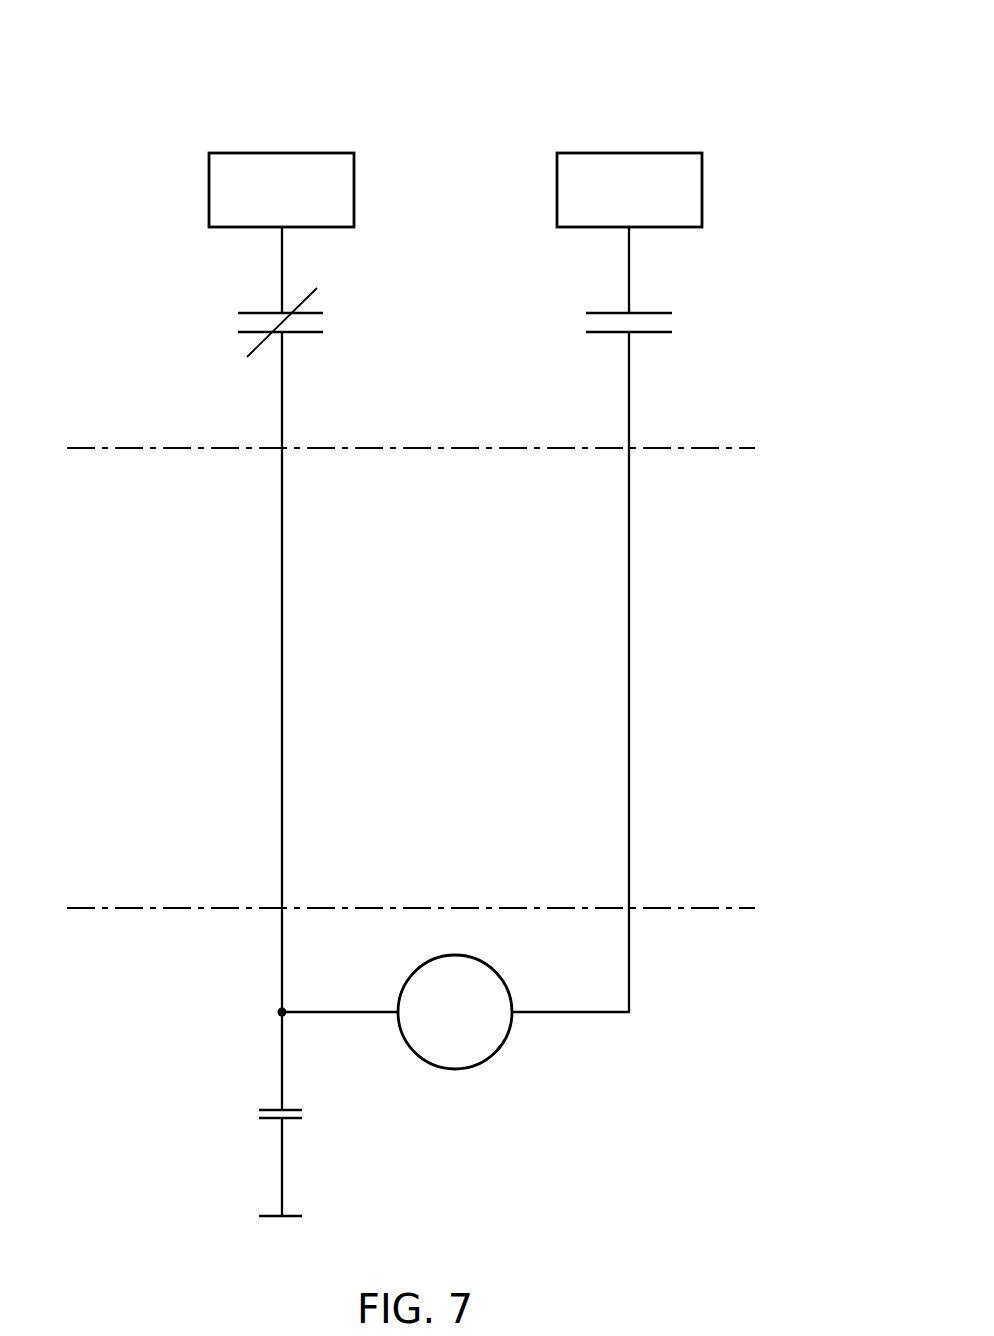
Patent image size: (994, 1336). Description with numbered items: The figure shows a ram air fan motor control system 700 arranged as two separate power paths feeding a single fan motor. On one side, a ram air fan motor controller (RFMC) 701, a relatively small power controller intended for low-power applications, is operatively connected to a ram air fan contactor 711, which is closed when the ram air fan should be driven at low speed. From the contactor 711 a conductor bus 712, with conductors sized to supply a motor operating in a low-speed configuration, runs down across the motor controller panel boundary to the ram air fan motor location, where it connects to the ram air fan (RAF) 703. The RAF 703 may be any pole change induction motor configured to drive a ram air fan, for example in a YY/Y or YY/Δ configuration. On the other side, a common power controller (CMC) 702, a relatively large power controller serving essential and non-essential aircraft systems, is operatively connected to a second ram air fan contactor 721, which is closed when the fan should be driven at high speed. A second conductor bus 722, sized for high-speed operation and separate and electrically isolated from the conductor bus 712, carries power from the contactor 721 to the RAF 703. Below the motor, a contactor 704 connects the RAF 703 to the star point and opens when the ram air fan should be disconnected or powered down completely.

The ram air fan motor control system 700 is at (715, 107).
The ram air fan motor controller (RFMC) 701 is at (240, 152).
The common power controller (CMC) 702 is at (593, 152).
The ram air fan (RAF) 703 is at (426, 1066).
The contactor 704 is at (272, 1108).
The ram air fan contactor 711 is at (253, 313).
The conductor bus 712 is at (280, 685).
The ram air fan contactor 721 is at (663, 313).
The conductor bus 722 is at (631, 660).